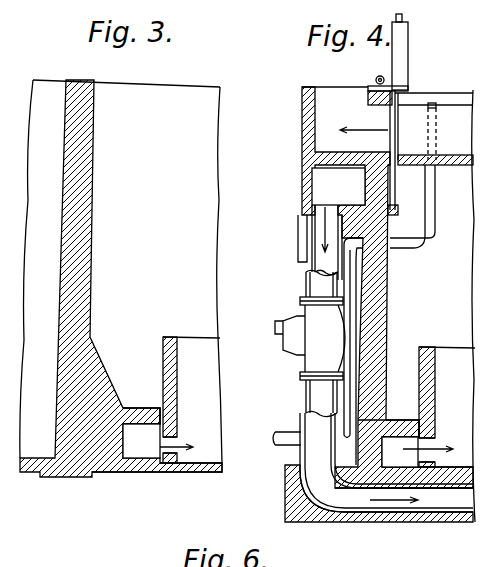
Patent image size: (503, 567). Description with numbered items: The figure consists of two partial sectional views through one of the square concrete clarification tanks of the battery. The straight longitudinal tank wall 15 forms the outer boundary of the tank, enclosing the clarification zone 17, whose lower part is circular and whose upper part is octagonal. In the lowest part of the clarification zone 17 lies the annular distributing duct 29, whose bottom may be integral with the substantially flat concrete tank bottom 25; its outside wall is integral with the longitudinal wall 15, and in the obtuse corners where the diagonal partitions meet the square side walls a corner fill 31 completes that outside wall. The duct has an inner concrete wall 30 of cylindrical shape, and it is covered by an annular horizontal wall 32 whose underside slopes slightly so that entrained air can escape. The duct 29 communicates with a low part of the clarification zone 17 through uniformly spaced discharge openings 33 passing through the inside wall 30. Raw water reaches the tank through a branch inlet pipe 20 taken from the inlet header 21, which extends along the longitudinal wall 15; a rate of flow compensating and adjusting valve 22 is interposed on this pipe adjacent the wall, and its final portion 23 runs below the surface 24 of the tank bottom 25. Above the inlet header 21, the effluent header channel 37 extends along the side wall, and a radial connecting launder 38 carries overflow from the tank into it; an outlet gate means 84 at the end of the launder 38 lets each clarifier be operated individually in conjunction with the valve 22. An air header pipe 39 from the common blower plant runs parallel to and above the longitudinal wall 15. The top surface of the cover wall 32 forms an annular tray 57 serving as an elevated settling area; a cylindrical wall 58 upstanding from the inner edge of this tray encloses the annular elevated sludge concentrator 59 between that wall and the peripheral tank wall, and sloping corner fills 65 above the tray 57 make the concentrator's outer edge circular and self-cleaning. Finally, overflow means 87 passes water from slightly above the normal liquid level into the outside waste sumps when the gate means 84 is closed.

In FIG. 3, the longitudinal tank wall 15 is at (93, 237).
In FIG. 4, the longitudinal tank wall 15 is at (386, 305).
In FIG. 3, the clarification zone 17 is at (190, 218).
In FIG. 4, the clarification zone 17 is at (460, 278).
In FIG. 4, the branch inlet pipe 20 is at (310, 277).
In FIG. 4, the inlet header 21 is at (345, 194).
In FIG. 4, the rate of flow compensating and adjusting valve 22 is at (298, 368).
In FIG. 4, the final portion of branch inlet pipe 23 is at (457, 515).
In FIG. 4, the surface of tank bottom 24 is at (457, 470).
In FIG. 3, the concrete tank bottom 25 is at (192, 470).
In FIG. 4, the concrete tank bottom 25 is at (430, 468).
In FIG. 3, the distributing duct 29 is at (133, 458).
In FIG. 4, the distributing duct 29 is at (392, 458).
In FIG. 3, the inner concrete wall 30 is at (163, 432).
In FIG. 3, the corner fill 31 is at (110, 432).
In FIG. 3, the annular horizontal wall 32 is at (168, 412).
In FIG. 4, the annular horizontal wall 32 is at (405, 418).
In FIG. 4, the discharge openings 33 is at (423, 446).
In FIG. 4, the effluent header channel 37 is at (345, 110).
In FIG. 4, the radial connecting launder 38 is at (467, 138).
In FIG. 4, the air header pipe 39 is at (376, 80).
In FIG. 3, the annular tray 57 is at (140, 409).
In FIG. 4, the annular tray 57 is at (388, 421).
In FIG. 3, the cylindrical wall 58 is at (178, 370).
In FIG. 4, the cylindrical wall 58 is at (436, 361).
In FIG. 3, the sludge concentrator 59 is at (152, 381).
In FIG. 4, the sludge concentrator 59 is at (414, 376).
In FIG. 3, the sloping corner fill 65 is at (95, 382).
In FIG. 4, the outlet gate means 84 is at (410, 60).
In FIG. 4, the overflow means 87 is at (436, 196).